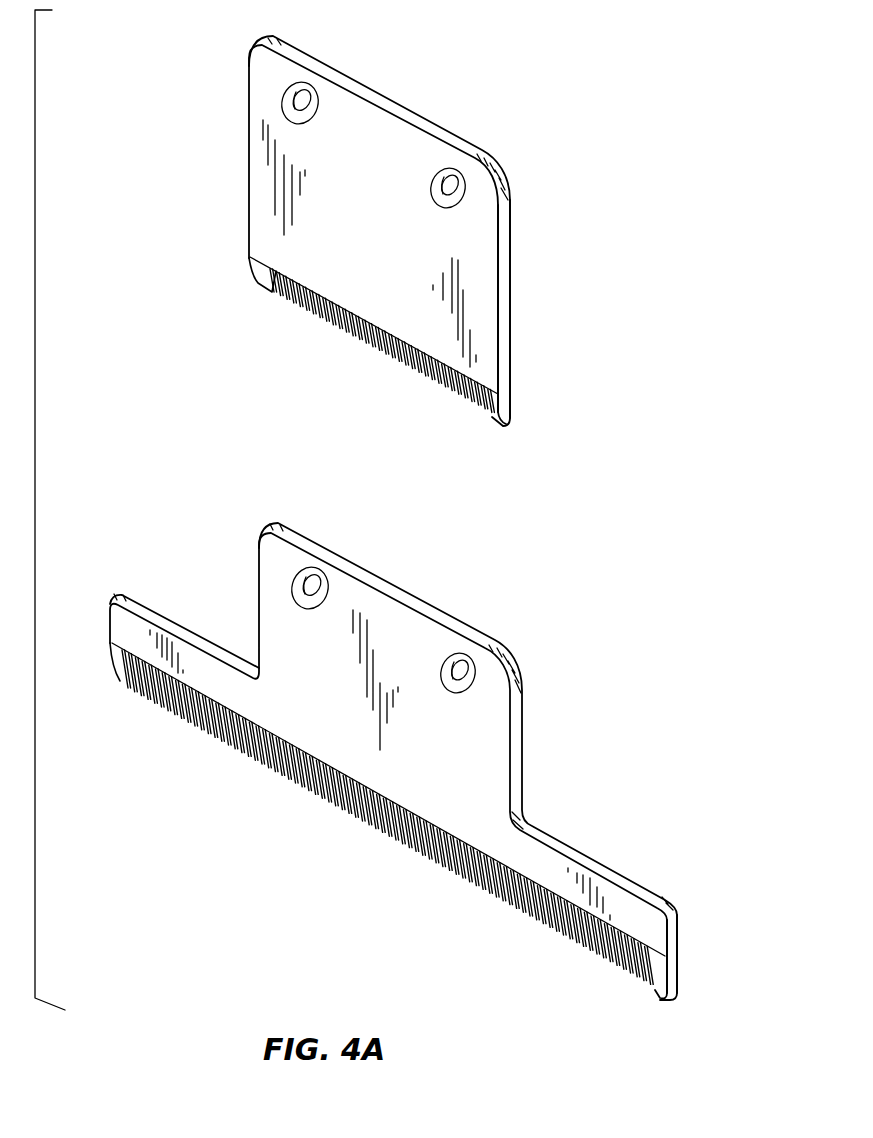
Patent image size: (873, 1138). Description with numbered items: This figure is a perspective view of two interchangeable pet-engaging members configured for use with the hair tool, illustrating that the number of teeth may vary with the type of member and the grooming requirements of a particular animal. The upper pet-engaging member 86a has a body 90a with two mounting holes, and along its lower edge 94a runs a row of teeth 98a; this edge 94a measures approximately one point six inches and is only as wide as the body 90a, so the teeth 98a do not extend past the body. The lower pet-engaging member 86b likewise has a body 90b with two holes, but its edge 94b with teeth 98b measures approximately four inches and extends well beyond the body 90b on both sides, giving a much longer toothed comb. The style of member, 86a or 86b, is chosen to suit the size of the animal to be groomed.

The pet-engaging member 86a is at (483, 250).
The body 90a is at (257, 94).
The edge 94a is at (513, 410).
The teeth 98a is at (424, 396).
The pet-engaging member 86b is at (493, 713).
The body 90b is at (270, 579).
The edge 94b is at (670, 933).
The teeth 98b is at (463, 906).